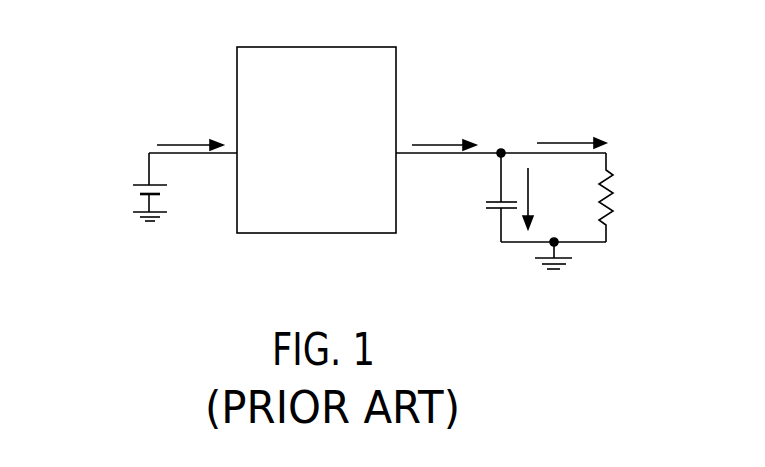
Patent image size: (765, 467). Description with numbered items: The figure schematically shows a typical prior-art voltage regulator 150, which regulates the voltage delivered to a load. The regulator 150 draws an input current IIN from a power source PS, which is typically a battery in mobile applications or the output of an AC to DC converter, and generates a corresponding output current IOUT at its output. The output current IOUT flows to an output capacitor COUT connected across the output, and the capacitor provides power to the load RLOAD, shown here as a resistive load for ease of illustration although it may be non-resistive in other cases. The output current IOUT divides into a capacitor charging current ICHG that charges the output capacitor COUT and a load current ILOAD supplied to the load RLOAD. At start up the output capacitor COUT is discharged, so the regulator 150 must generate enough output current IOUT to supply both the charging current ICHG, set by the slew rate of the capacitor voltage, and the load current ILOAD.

The regulator 150 is at (396, 60).
The power source PS is at (150, 187).
The input current IIN is at (190, 133).
The output current IOUT is at (444, 133).
The output capacitor COUT is at (483, 197).
The capacitor charging current ICHG is at (544, 198).
The load RLOAD is at (628, 197).
The load current ILOAD is at (571, 131).